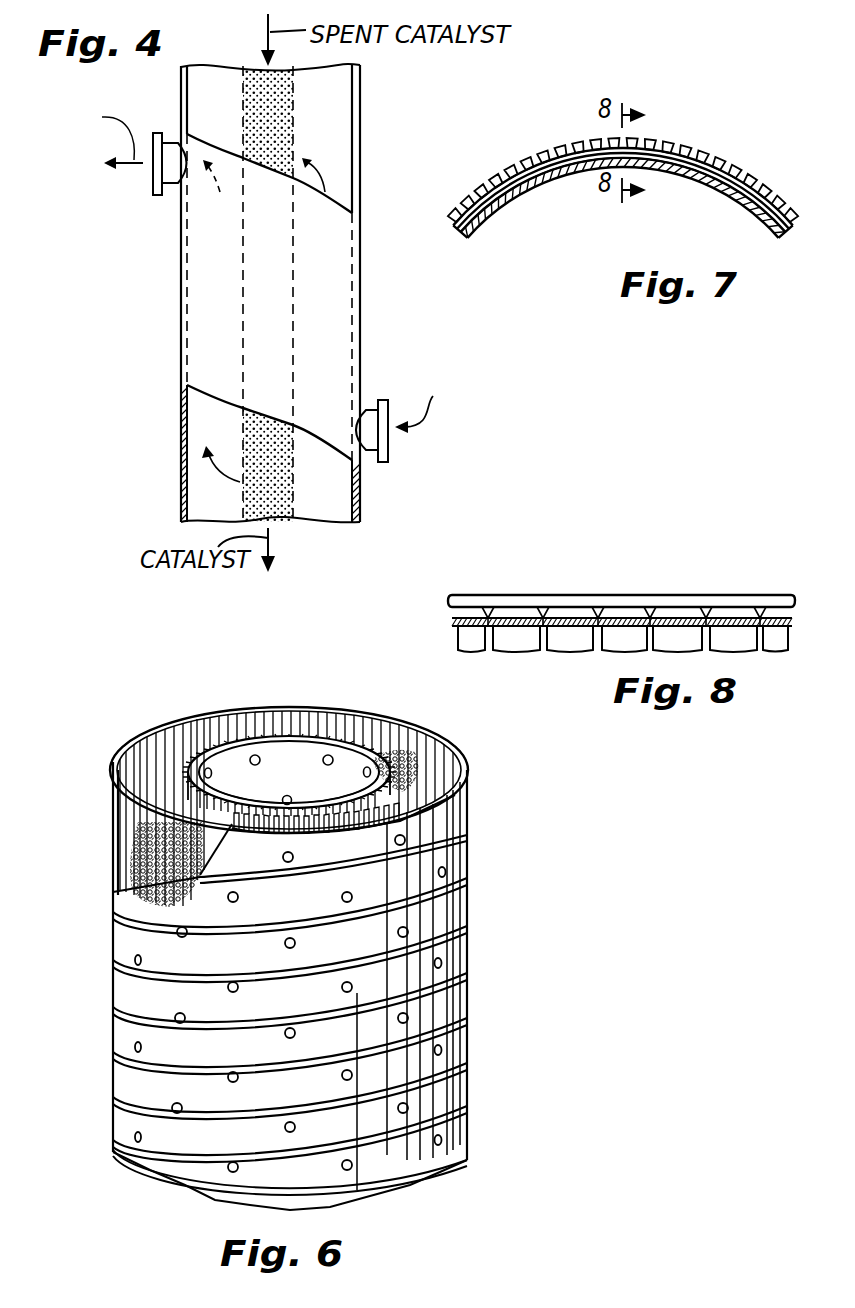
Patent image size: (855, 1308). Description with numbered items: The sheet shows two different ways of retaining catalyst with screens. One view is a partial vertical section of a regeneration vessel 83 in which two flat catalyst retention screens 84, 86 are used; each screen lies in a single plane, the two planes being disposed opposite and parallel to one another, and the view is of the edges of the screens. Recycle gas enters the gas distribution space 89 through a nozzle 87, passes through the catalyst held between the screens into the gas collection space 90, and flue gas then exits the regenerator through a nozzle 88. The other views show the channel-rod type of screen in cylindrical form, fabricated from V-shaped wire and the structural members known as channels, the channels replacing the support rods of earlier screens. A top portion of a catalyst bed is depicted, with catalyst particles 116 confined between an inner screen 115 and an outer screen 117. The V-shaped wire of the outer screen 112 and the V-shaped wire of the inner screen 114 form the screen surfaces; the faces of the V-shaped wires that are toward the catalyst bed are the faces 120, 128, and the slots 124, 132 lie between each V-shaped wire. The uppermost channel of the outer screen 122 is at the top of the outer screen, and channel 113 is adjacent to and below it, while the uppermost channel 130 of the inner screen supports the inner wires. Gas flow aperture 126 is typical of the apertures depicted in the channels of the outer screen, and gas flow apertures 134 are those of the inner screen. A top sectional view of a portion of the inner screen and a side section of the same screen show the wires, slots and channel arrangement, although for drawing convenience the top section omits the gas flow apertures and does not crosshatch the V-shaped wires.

In FIG. 4, the regeneration vessel 83 is at (360, 200).
In FIG. 4, the catalyst retention screen 84 is at (293, 97).
In FIG. 4, the catalyst retention screen 86 is at (247, 101).
In FIG. 4, the nozzle 87 is at (385, 404).
In FIG. 4, the nozzle 88 is at (158, 197).
In FIG. 4, the gas distribution space 89 is at (338, 144).
In FIG. 4, the gas collection space 90 is at (230, 444).
In FIG. 6, the V-shaped wire of the outer screen 112 is at (243, 710).
In FIG. 6, the channel 113 is at (396, 909).
In FIG. 7, the V-shaped wire of the inner screen 114 is at (529, 155).
In FIG. 8, the V-shaped wire of the inner screen 114 is at (795, 603).
In FIG. 6, the V-shaped wire of the inner screen 114 is at (212, 830).
In FIG. 6, the inner screen 115 is at (367, 714).
In FIG. 6, the catalyst particles 116 is at (113, 892).
In FIG. 6, the outer screen 117 is at (443, 743).
In FIG. 6, the face of V-shaped wire 120 is at (275, 712).
In FIG. 6, the uppermost channel of the outer screen 122 is at (112, 790).
In FIG. 6, the slot 124 is at (317, 712).
In FIG. 6, the gas flow aperture 126 is at (236, 982).
In FIG. 7, the face of V-shaped wire 128 is at (703, 155).
In FIG. 8, the face of V-shaped wire 128 is at (515, 592).
In FIG. 7, the uppermost channel of the inner screen 130 is at (494, 223).
In FIG. 6, the uppermost channel of the inner screen 130 is at (308, 800).
In FIG. 7, the slot 132 is at (769, 192).
In FIG. 6, the slot 132 is at (325, 822).
In FIG. 8, the gas flow apertures 134 is at (620, 614).
In FIG. 6, the gas flow apertures 134 is at (309, 712).